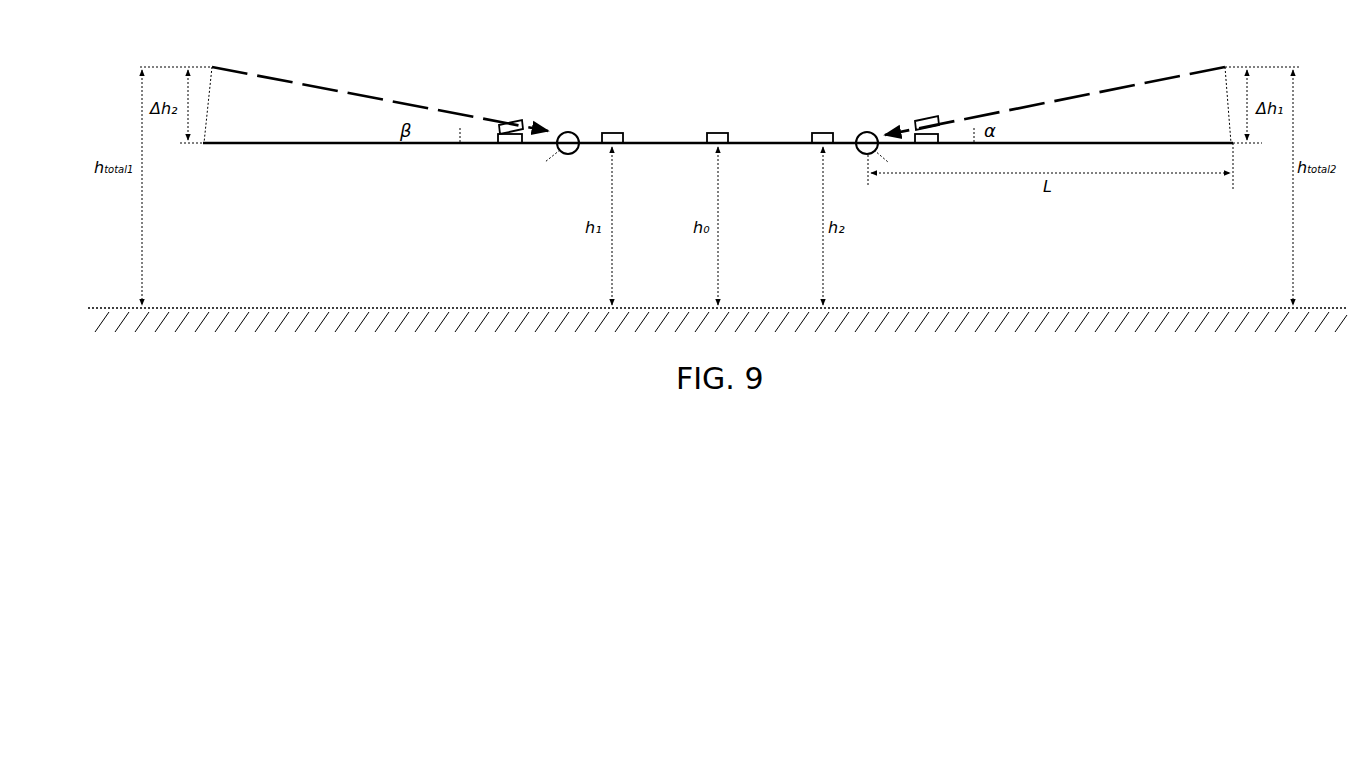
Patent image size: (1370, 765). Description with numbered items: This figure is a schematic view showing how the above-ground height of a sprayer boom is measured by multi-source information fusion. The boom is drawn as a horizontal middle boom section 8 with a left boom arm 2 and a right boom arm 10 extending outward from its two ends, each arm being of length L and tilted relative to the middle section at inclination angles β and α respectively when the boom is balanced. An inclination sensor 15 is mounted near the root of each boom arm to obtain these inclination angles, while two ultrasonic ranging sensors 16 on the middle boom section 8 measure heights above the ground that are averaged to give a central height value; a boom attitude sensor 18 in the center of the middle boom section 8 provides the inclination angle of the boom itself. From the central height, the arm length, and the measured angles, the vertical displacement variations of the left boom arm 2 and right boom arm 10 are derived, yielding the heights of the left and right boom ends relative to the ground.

The left boom arm 2 is at (284, 142).
The middle boom section 8 is at (668, 141).
The right boom arm 10 is at (1150, 141).
The inclination sensor A 15 is at (510, 122).
The ultrasonic ranging sensor A 16 is at (607, 133).
The boom attitude sensor 18 is at (718, 131).